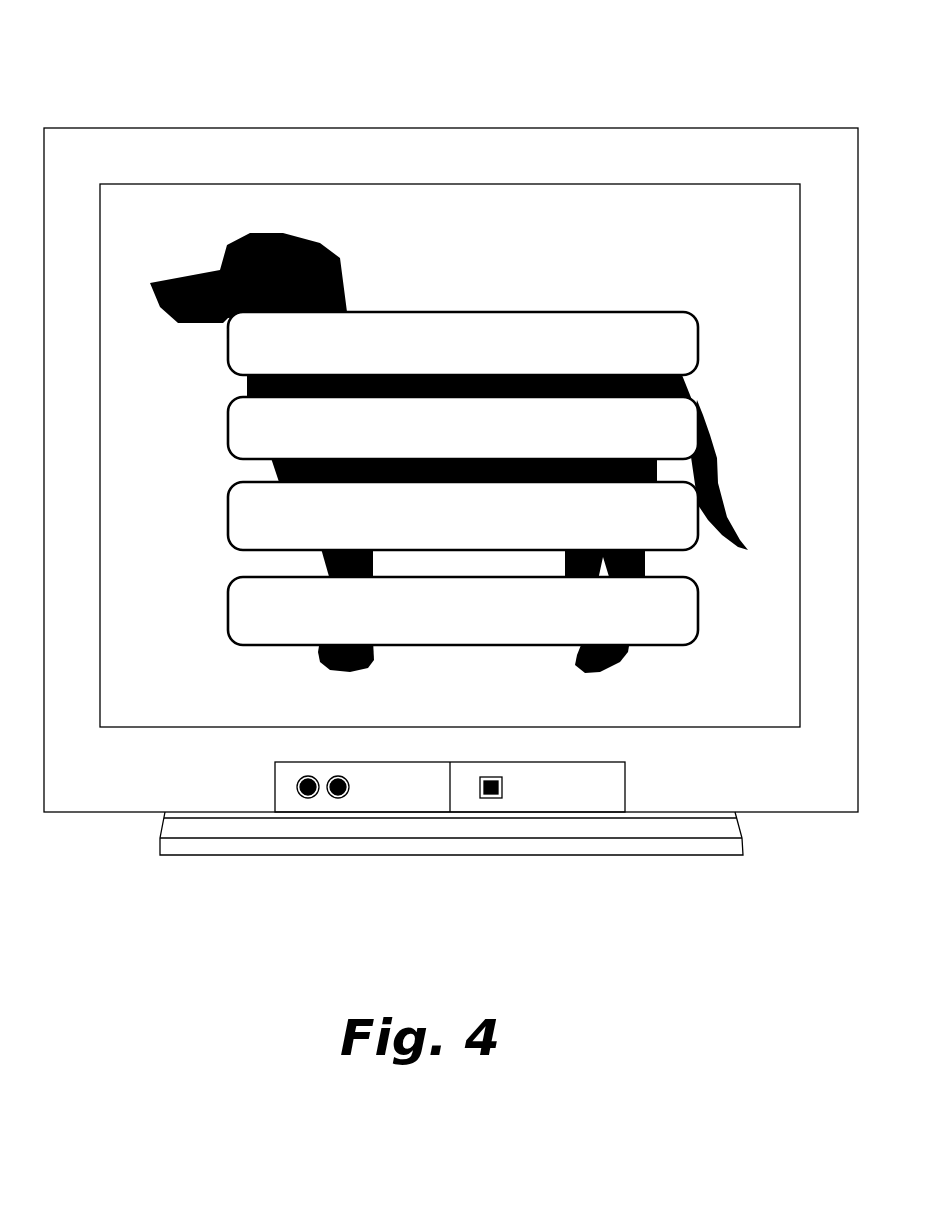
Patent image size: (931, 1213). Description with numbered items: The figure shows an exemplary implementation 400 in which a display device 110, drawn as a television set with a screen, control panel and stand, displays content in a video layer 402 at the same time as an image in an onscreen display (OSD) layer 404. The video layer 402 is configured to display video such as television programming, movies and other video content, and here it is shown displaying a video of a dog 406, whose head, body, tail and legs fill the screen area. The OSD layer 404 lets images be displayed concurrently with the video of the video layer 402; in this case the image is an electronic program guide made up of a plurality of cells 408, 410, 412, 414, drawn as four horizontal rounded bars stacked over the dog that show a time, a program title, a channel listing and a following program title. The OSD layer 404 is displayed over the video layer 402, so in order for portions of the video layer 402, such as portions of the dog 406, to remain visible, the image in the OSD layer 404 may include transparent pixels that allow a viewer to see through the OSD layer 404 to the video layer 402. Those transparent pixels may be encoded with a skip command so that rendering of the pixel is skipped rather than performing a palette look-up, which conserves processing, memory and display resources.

The exemplary implementation 400 is at (152, 44).
The display device 110 is at (172, 229).
The video layer 402 is at (455, 183).
The onscreen display (OSD) layer 404 is at (670, 280).
The dog 406 is at (315, 243).
The cell 408 is at (699, 327).
The cell 410 is at (226, 412).
The cell 412 is at (226, 498).
The cell 414 is at (226, 593).